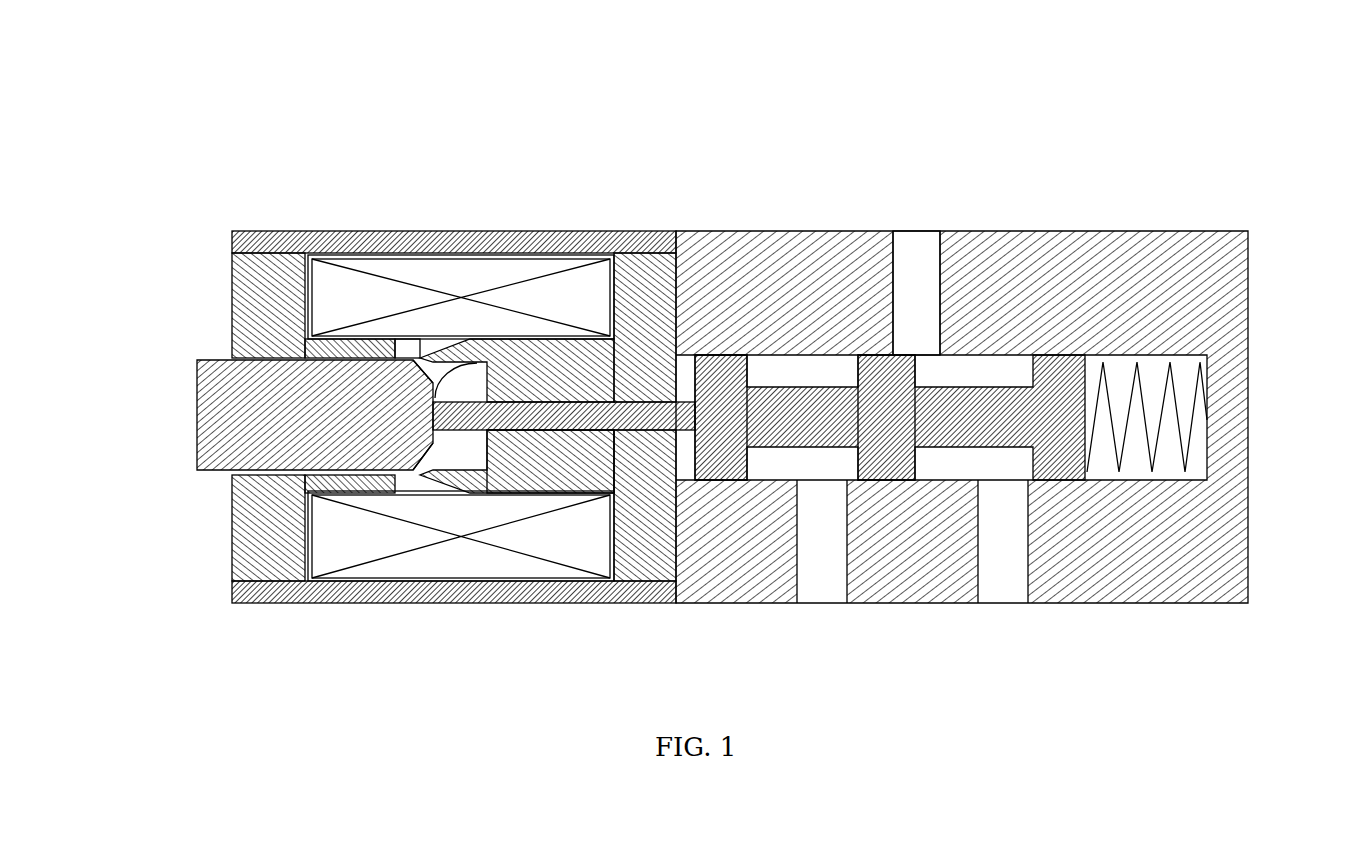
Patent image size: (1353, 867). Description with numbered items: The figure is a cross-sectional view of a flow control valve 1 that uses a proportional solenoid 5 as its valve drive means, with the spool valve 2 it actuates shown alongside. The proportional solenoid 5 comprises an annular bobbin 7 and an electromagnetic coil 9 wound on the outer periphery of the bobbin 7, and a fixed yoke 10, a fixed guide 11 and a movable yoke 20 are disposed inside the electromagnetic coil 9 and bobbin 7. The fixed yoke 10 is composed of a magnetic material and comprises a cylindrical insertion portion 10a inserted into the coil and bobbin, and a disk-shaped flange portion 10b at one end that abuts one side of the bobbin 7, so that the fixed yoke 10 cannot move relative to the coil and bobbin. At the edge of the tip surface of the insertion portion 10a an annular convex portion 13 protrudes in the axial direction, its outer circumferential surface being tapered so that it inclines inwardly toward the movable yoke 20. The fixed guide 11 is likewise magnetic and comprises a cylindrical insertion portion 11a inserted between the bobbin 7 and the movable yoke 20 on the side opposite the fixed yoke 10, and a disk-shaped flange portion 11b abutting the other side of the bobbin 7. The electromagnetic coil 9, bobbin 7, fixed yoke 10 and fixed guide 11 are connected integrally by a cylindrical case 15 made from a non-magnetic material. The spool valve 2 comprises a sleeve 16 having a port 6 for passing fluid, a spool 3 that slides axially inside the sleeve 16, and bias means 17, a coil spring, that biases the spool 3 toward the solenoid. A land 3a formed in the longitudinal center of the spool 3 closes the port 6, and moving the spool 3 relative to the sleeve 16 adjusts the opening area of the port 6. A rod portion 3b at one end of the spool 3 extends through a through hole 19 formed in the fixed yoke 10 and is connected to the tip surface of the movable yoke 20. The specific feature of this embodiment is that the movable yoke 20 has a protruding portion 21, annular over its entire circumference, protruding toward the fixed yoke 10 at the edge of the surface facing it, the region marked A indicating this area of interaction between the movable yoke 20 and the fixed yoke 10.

The flow control valve 1 is at (845, 83).
The spool valve 2 is at (1025, 176).
The spool 3 is at (1000, 452).
The land 3a is at (880, 355).
The rod portion 3b is at (690, 520).
The proportional solenoid 5 is at (443, 156).
The port 6 is at (913, 262).
The bobbin 7 is at (530, 440).
The electromagnetic coil 9 is at (478, 556).
The fixed yoke 10 is at (660, 560).
The insertion portion 10a is at (548, 355).
The flange portion 10b is at (640, 280).
The fixed guide 11 is at (231, 290).
The insertion portion 11a is at (350, 495).
The flange portion 11b is at (232, 553).
The annular convex portion 13 is at (455, 345).
The cylindrical case 15 is at (302, 232).
The sleeve 16 is at (1148, 232).
The bias means 17 is at (1160, 425).
The through hole 19 is at (585, 460).
The movable yoke 20 is at (192, 399).
The protruding portion 21 is at (437, 470).
The magnetic attraction region A is at (405, 350).